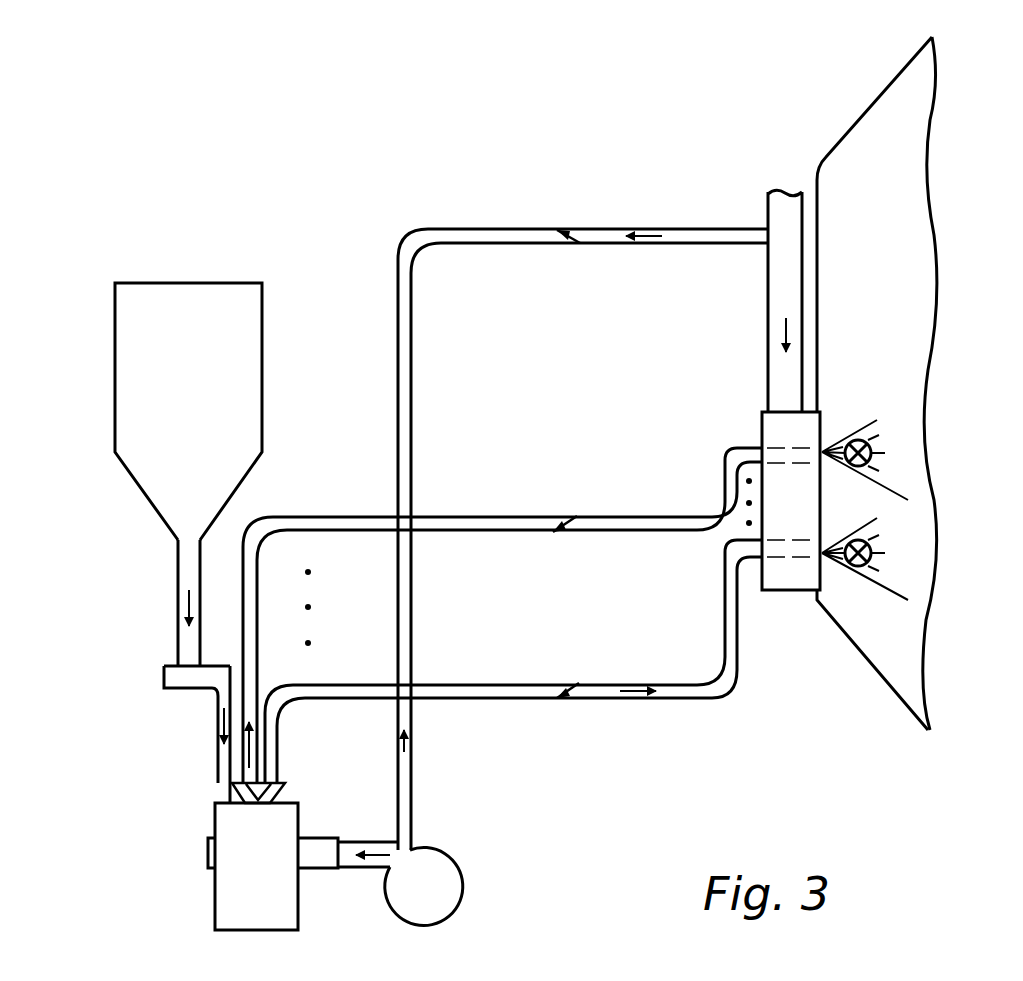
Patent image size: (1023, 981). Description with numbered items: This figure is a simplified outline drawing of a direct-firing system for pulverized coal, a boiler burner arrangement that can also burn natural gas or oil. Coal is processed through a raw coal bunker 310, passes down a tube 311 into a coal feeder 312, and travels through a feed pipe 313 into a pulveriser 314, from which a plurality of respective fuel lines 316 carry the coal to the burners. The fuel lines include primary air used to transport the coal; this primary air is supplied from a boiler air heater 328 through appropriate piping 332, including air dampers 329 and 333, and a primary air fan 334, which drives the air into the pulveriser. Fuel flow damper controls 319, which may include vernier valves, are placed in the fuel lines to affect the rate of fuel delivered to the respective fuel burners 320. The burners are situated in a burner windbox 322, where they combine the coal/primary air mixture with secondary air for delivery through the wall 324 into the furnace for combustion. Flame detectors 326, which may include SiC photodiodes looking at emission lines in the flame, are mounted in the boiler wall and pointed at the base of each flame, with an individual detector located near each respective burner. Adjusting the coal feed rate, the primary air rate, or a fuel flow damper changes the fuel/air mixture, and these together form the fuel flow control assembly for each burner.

The raw coal bunker 310 is at (258, 372).
The feed tube 311 is at (178, 590).
The coal feeder 312 is at (166, 668).
The feed pipe 313 is at (221, 764).
The pulveriser 314 is at (222, 848).
The fuel lines 316 is at (452, 522).
The fuel flow damper controls 319 is at (557, 523).
The fuel burners 320 is at (714, 441).
The burner windbox 322 is at (760, 420).
The wall 324 is at (920, 177).
The flame detectors 326 is at (863, 418).
The boiler air heater 328 is at (773, 267).
The air damper 329 is at (572, 240).
The piping 332 is at (470, 235).
The air damper 333 is at (410, 785).
The primary air fan 334 is at (428, 878).